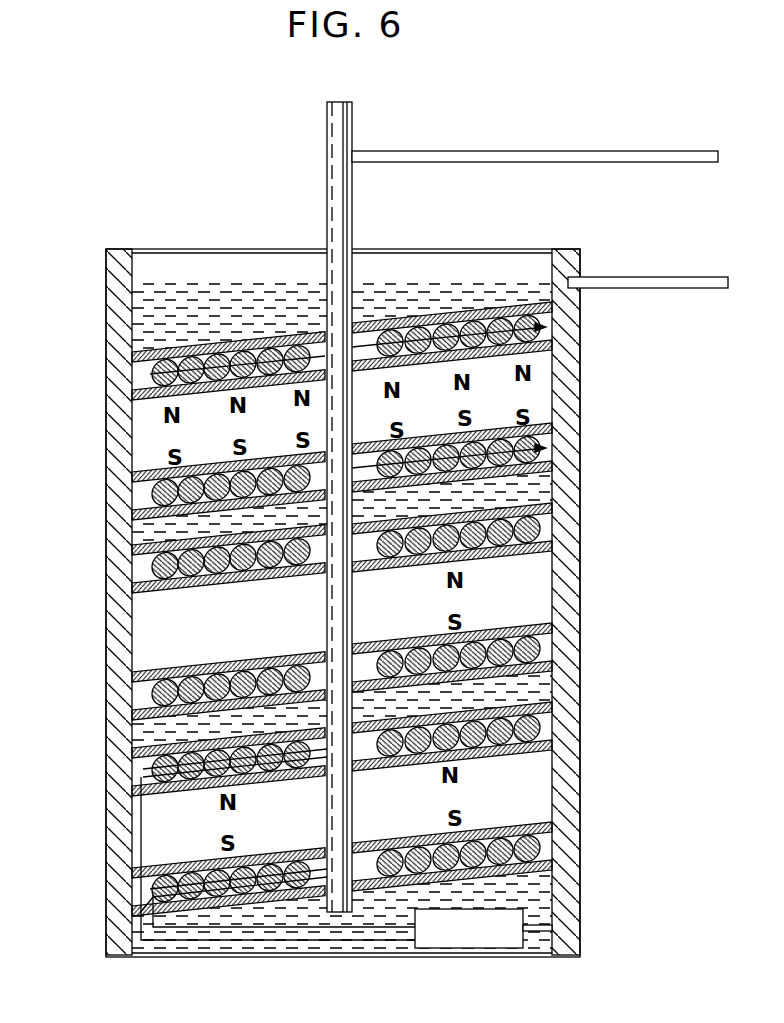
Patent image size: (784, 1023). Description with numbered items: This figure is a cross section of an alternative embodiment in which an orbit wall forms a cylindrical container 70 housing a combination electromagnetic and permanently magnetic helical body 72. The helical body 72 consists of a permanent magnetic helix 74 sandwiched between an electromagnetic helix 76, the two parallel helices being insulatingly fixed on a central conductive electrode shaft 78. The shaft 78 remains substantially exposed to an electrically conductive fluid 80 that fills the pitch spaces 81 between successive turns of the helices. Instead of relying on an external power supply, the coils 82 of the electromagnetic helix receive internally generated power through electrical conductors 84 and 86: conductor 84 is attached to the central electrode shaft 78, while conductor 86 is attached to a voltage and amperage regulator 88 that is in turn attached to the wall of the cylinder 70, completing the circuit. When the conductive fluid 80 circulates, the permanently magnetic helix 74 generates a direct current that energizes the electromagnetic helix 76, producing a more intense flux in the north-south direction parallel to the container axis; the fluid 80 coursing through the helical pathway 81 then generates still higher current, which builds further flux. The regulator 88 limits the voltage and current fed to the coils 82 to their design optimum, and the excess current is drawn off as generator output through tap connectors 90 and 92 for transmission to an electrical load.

The cylindrical container 70 is at (97, 707).
The helical body 72 is at (252, 326).
The permanent magnetic helix 74 is at (142, 632).
The electromagnetic helix 76 is at (142, 374).
The conductive electrode shaft 78 is at (317, 133).
The electrically conductive fluid 80 is at (142, 318).
The pitch spaces 81 is at (142, 533).
The coils 82 is at (142, 490).
The electrical conductor 84 is at (552, 327).
The electrical conductor 86 is at (130, 913).
The voltage and amperage regulator 88 is at (446, 960).
The tap connector 90 is at (661, 141).
The tap connector 92 is at (668, 267).